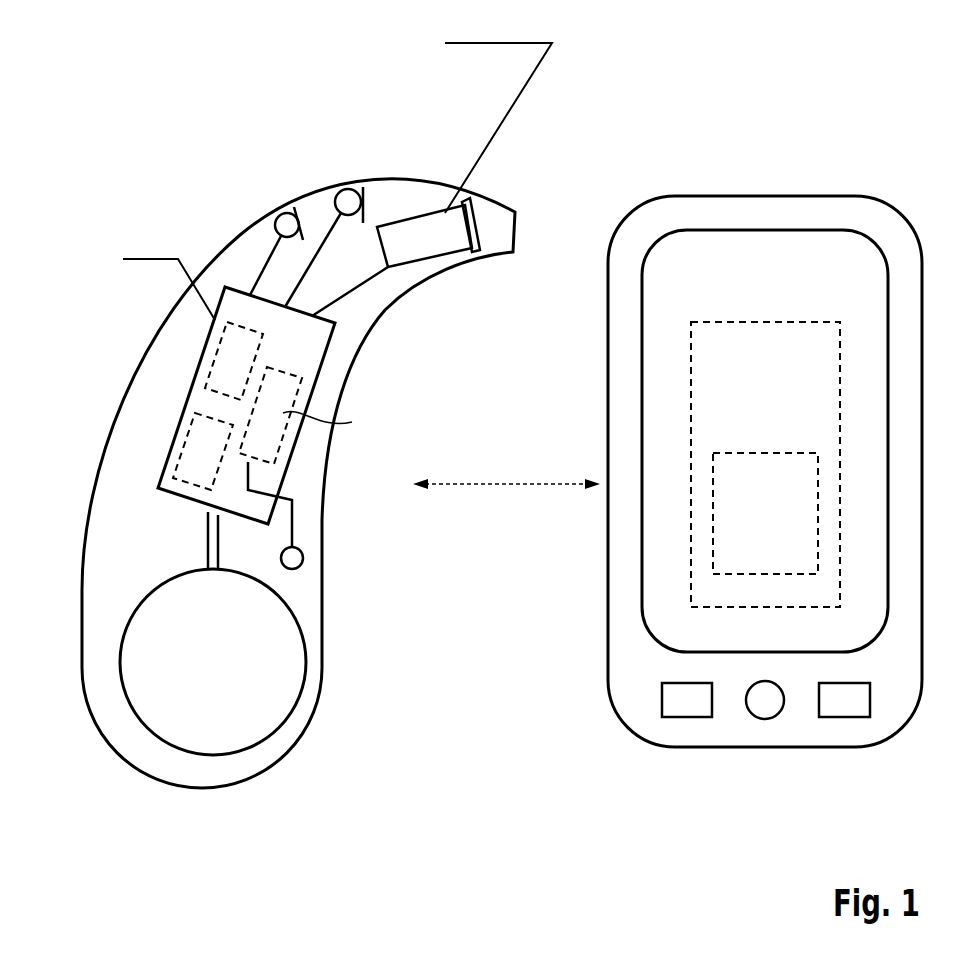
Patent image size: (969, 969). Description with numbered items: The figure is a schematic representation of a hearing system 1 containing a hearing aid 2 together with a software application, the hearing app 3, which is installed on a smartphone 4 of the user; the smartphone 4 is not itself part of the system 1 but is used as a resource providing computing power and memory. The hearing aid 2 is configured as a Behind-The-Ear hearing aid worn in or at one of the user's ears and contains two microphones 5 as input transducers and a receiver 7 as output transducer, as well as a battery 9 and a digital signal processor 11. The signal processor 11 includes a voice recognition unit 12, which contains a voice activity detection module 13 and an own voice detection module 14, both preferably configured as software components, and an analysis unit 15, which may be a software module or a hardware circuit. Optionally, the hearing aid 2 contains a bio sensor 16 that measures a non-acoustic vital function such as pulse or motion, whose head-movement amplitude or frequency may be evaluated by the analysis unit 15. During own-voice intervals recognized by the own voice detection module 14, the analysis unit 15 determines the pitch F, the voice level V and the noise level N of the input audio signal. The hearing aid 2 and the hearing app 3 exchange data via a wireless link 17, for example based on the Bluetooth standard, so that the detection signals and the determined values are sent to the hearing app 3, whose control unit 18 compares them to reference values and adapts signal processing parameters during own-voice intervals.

The hearing system 1 is at (652, 82).
The hearing aid 2 is at (98, 731).
The hearing app 3 is at (87, 487).
The smartphone 4 is at (778, 196).
The microphones 5 is at (286, 213).
The receiver 7 is at (433, 212).
The battery 9 is at (295, 668).
The signal processor 11 is at (188, 397).
The voice recognition unit 12 is at (134, 386).
The voice activity detection module 13 is at (182, 460).
The own voice detection module 14 is at (207, 338).
The analysis unit 15 is at (275, 462).
The bio sensor 16 is at (295, 560).
The wireless link 17 is at (504, 484).
The control unit 18 is at (713, 538).